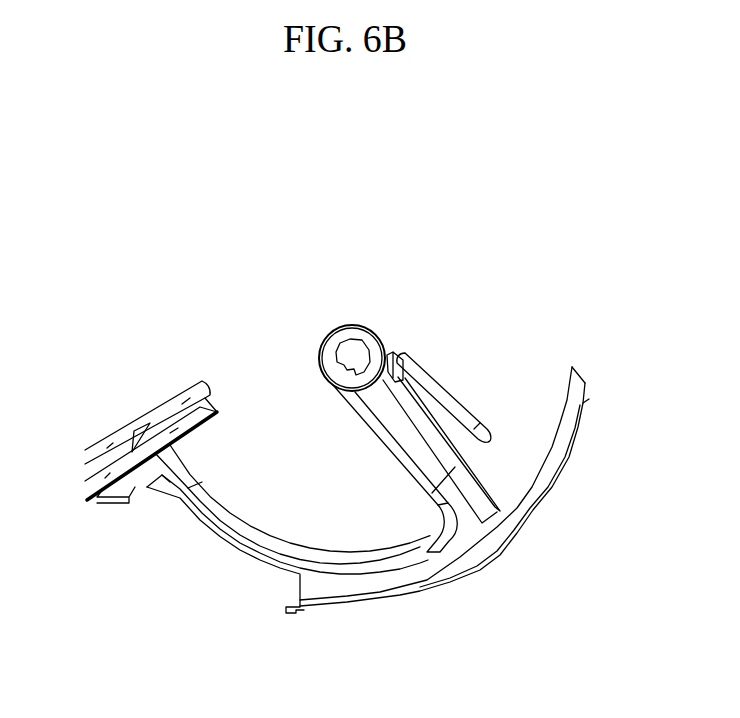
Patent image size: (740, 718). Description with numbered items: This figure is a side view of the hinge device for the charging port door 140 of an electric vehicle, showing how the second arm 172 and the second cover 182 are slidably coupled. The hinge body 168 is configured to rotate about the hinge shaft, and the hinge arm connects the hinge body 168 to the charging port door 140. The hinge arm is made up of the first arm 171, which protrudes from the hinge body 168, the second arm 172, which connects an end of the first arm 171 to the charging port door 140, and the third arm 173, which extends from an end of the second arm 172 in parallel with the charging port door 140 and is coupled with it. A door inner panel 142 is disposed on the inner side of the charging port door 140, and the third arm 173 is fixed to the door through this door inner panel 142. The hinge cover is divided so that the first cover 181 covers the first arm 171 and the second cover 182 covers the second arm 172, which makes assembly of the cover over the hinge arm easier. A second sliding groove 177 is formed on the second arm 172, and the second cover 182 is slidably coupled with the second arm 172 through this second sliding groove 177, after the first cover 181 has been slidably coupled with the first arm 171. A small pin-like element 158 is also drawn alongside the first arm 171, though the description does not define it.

The charging port door 140 is at (168, 400).
The door inner panel 142 is at (218, 414).
The guide pin 158 is at (441, 384).
The hinge body 168 is at (354, 325).
The first arm 171 is at (372, 425).
The second arm 172 is at (303, 547).
The third arm 173 is at (137, 485).
The second sliding groove 177 is at (232, 545).
The first cover 181 is at (490, 487).
The second cover 182 is at (552, 485).